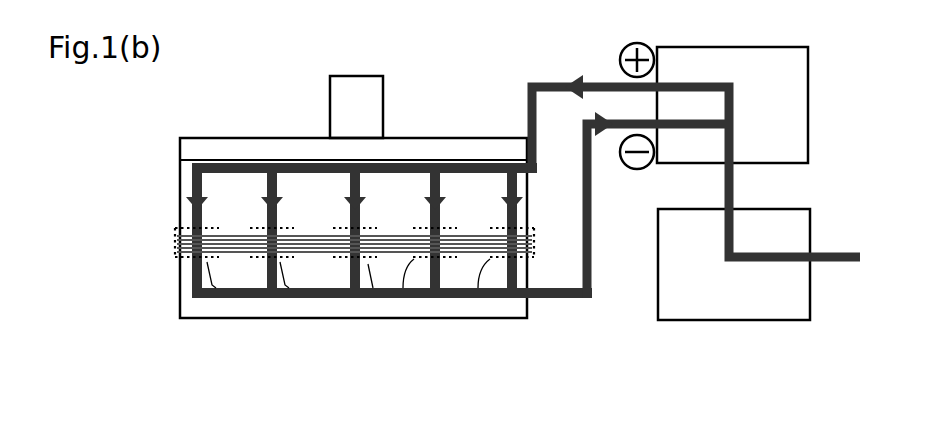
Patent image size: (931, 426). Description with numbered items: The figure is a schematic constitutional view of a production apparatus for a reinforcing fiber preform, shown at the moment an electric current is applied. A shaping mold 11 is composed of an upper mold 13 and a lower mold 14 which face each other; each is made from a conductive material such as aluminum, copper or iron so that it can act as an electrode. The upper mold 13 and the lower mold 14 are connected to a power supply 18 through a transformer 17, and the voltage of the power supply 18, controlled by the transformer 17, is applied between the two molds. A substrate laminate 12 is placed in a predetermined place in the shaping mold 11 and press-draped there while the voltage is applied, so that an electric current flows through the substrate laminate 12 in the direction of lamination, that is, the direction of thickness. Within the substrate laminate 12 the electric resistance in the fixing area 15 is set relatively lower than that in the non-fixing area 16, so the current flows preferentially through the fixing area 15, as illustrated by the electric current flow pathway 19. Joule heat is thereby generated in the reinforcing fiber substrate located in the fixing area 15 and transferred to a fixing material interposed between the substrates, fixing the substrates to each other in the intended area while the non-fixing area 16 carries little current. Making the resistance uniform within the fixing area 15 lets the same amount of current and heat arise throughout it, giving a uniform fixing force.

The shaping mold 11 is at (105, 332).
The substrate laminate 12 is at (160, 257).
The upper mold 13 is at (185, 172).
The lower mold 14 is at (192, 280).
The fixing area 15 is at (218, 300).
The non-fixing area 16 is at (230, 238).
The transformer 17 is at (757, 83).
The power supply 18 is at (738, 272).
The electric current flow pathway 19 is at (553, 72).